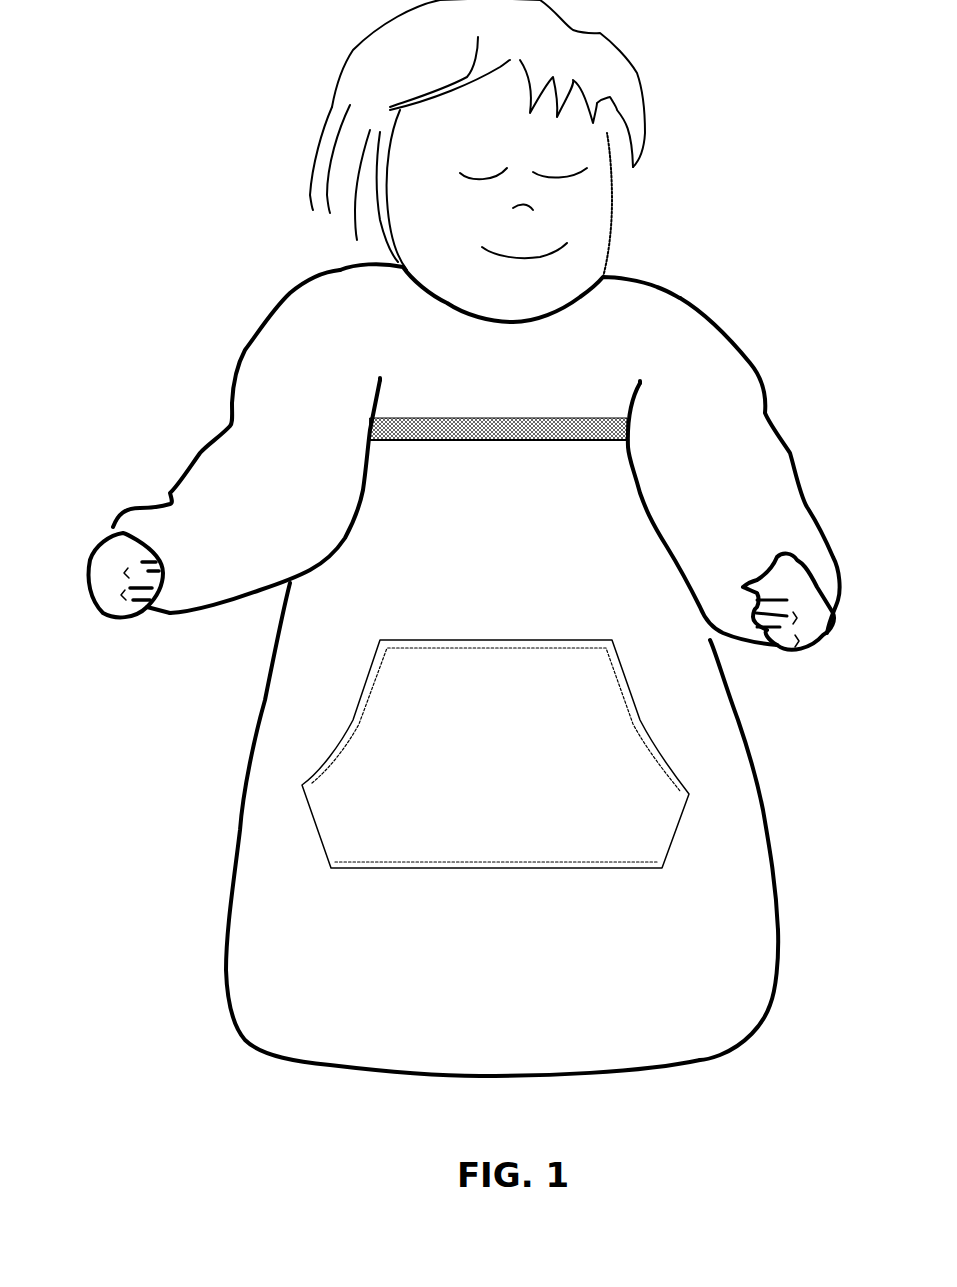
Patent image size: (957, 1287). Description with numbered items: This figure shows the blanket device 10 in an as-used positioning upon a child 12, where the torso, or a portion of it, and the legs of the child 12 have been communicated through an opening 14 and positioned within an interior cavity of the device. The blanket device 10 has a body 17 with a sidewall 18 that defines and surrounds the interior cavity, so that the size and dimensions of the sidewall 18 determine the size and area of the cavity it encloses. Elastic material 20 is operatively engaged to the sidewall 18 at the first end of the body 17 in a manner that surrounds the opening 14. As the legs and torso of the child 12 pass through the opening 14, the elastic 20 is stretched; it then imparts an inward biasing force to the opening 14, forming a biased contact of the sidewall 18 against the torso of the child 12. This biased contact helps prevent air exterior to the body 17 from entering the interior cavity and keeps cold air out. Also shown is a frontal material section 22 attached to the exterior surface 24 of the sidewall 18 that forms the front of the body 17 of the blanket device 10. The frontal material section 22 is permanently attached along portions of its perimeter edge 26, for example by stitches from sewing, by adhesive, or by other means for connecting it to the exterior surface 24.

The blanket device 10 is at (185, 733).
The child 12 is at (663, 327).
The opening 14 is at (550, 415).
The body 17 is at (773, 853).
The sidewall 18 is at (722, 777).
The elastic material 20 is at (468, 430).
The frontal material section 22 is at (470, 820).
The exterior surface 24 is at (698, 985).
The perimeter edge 26 is at (470, 640).